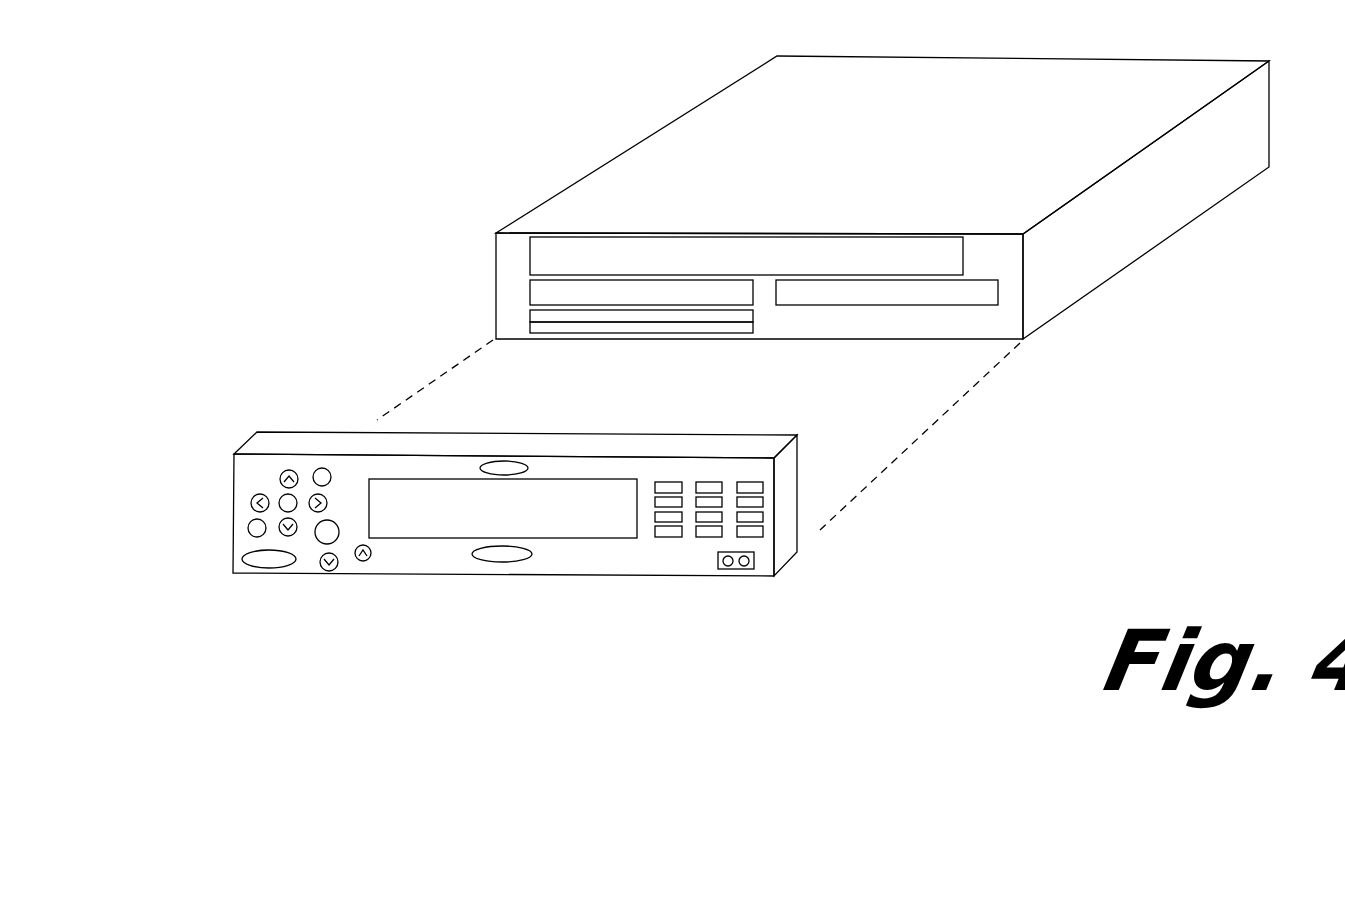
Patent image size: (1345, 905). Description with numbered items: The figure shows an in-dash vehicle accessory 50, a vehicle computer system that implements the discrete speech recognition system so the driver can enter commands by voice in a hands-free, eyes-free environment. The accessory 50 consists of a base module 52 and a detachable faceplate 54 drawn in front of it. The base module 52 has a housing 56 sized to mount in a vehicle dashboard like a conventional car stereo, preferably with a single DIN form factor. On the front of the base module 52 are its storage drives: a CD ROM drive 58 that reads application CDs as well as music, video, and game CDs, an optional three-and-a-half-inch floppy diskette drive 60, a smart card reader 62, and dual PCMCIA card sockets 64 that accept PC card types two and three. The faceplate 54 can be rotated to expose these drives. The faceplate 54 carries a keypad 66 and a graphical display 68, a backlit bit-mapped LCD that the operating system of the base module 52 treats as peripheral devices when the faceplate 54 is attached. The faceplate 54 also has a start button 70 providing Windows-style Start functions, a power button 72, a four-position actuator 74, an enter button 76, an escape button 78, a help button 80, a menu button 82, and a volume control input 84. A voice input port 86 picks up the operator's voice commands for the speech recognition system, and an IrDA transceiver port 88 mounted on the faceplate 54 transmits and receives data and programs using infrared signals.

The in-dash vehicle accessory 50 is at (393, 94).
The base module 52 is at (828, 293).
The detachable faceplate 54 is at (797, 612).
The housing 56 is at (1165, 255).
The CD ROM drive 58 is at (683, 257).
The floppy diskette drive 60 is at (587, 292).
The smart card reader 62 is at (917, 295).
The dual PCMCIA card sockets 64 is at (652, 333).
The keypad 66 is at (707, 538).
The graphical display 68 is at (602, 483).
The start button 70 is at (502, 565).
The power button 72 is at (269, 568).
The four-position actuator 74 is at (282, 478).
The enter button 76 is at (282, 509).
The escape button 78 is at (320, 467).
The help button 80 is at (248, 530).
The menu button 82 is at (323, 543).
The volume control input 84 is at (338, 570).
The voice input port 86 is at (503, 462).
The IrDA transceiver port 88 is at (741, 568).